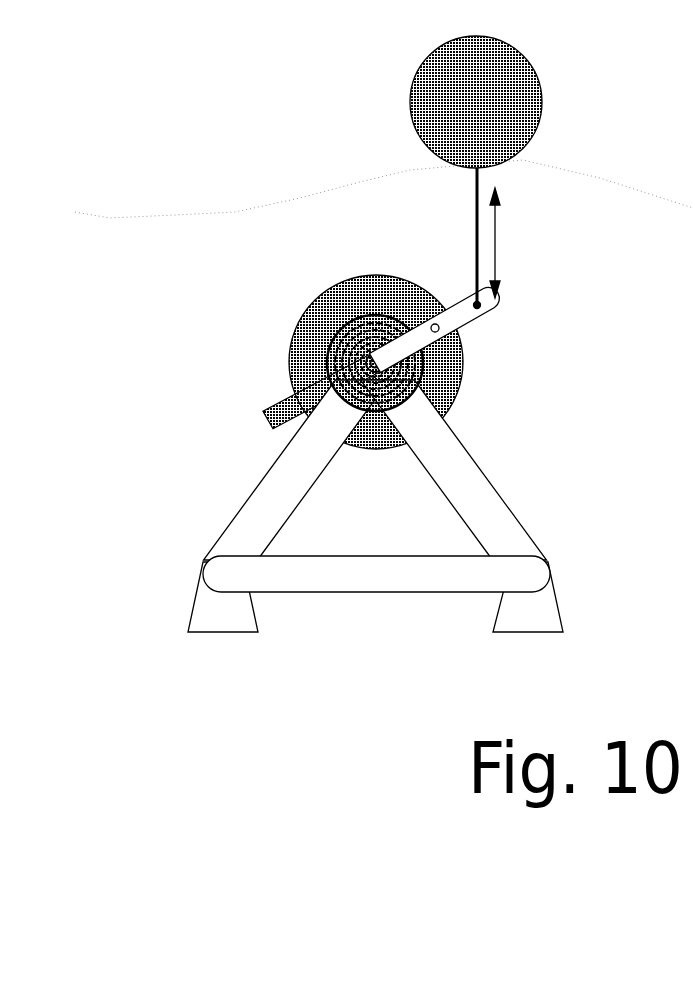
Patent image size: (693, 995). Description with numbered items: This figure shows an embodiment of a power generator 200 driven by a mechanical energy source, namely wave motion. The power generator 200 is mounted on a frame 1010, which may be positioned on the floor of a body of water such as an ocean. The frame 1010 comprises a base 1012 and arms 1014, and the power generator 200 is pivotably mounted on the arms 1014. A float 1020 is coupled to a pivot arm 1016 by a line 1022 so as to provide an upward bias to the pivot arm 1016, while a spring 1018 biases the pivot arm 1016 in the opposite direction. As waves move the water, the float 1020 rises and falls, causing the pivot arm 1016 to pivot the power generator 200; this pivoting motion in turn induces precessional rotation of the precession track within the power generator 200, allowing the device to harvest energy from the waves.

The float 1020 is at (533, 73).
The rod / reciprocating link 1022 is at (475, 227).
The power generator 200 is at (333, 290).
The spring 1018 is at (332, 343).
The pivot arm 1016 is at (278, 415).
The arms 1014 is at (262, 507).
The base 1012 is at (410, 583).
The frame 1010 is at (361, 432).